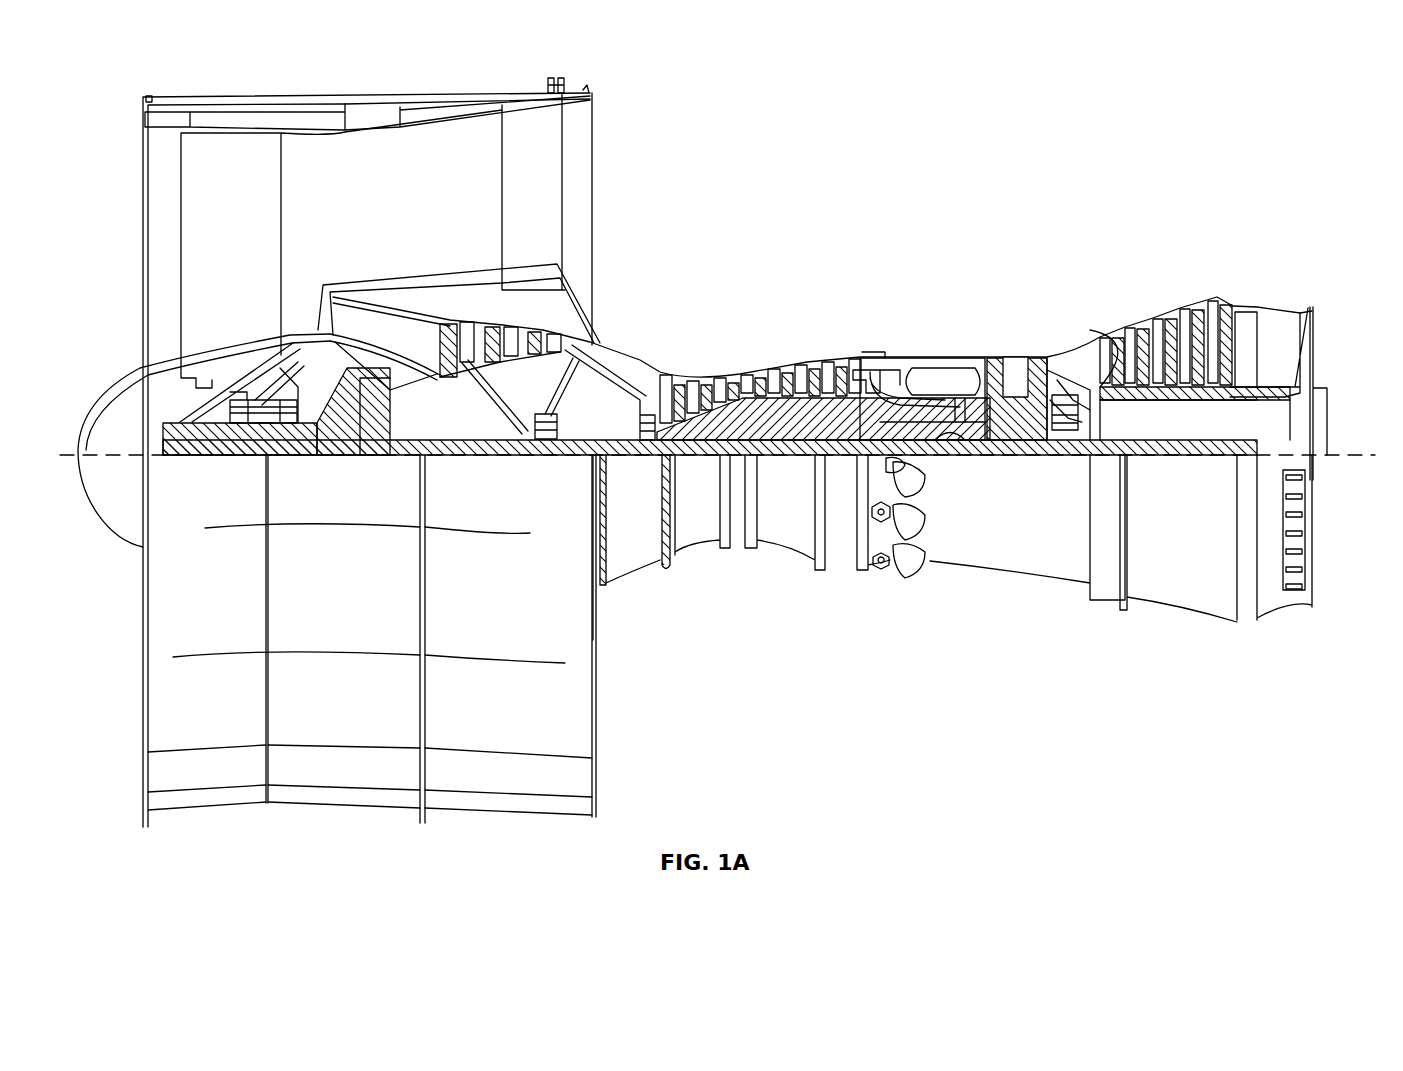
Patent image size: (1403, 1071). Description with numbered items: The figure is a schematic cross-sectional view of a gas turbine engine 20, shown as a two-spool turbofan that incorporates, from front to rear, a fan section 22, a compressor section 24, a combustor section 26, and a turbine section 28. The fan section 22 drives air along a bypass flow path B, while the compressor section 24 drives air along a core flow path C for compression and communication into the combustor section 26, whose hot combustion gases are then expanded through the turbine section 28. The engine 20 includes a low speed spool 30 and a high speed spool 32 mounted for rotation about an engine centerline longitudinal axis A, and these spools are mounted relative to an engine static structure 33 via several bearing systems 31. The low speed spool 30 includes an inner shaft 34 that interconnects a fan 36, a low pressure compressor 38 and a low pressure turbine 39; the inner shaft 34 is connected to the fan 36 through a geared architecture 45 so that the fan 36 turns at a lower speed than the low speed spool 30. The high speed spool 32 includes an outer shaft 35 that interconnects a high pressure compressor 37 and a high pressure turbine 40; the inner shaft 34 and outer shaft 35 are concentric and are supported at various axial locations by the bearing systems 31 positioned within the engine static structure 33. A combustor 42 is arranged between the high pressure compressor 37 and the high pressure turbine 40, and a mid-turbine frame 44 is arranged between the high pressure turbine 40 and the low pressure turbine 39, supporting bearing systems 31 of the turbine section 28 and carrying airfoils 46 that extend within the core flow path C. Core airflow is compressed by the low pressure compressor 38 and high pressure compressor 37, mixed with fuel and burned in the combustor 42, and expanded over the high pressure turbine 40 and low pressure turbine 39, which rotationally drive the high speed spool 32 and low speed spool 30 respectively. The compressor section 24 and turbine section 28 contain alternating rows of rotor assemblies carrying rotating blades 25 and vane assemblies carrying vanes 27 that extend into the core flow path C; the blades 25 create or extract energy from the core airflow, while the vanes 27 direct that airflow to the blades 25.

The gas turbine engine 20 is at (1080, 150).
The fan section 22 is at (241, 95).
The compressor section 24 is at (648, 352).
The blades 25 is at (437, 328).
The combustor section 26 is at (935, 350).
The vanes 27 is at (468, 362).
The turbine section 28 is at (1142, 238).
The low speed spool 30 is at (792, 462).
The bearing systems 31 is at (245, 425).
The high speed spool 32 is at (832, 420).
The engine static structure 33 is at (838, 565).
The inner shaft 34 is at (622, 458).
The outer shaft 35 is at (950, 432).
The fan 36 is at (245, 226).
The high pressure compressor 37 is at (757, 422).
The low pressure compressor 38 is at (500, 330).
The low pressure turbine 39 is at (1168, 330).
The high pressure turbine 40 is at (1010, 357).
The combustor 42 is at (925, 385).
The mid-turbine frame 44 is at (1066, 345).
The geared architecture 45 is at (378, 432).
The airfoils 46 is at (1056, 382).
The engine centerline longitudinal axis A is at (1368, 452).
The bypass flow path B is at (438, 197).
The core flow path C is at (625, 382).